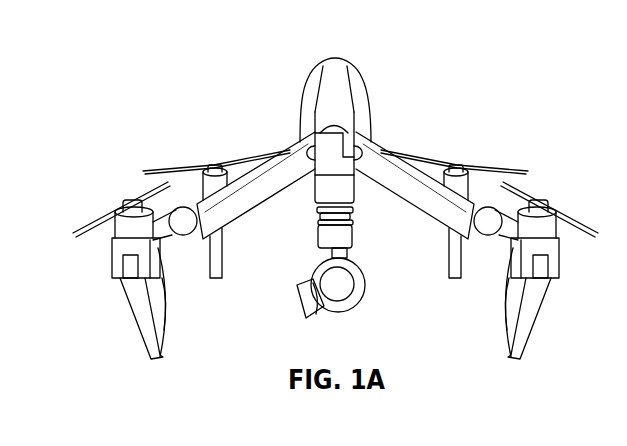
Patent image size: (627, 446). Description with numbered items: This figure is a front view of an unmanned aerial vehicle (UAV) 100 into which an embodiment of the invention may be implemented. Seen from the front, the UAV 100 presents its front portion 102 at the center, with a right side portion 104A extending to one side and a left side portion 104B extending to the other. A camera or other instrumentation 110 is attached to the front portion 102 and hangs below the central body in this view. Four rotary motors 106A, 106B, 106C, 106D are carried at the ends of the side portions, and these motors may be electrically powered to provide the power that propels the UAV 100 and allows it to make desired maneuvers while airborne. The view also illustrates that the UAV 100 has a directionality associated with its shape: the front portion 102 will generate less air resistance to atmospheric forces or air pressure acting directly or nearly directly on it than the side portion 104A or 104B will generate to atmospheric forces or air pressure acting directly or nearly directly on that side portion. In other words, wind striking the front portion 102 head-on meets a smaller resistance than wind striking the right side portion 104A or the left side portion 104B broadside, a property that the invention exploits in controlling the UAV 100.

The unmanned aerial vehicle 100 is at (316, 208).
The front portion 102 is at (368, 158).
The right side portion 104A is at (370, 108).
The left side portion 104B is at (302, 108).
The rotary motor 106A is at (538, 203).
The rotary motor 106B is at (455, 166).
The rotary motor 106C is at (121, 212).
The rotary motor 106D is at (215, 165).
The camera or other instrumentation 110 is at (297, 300).